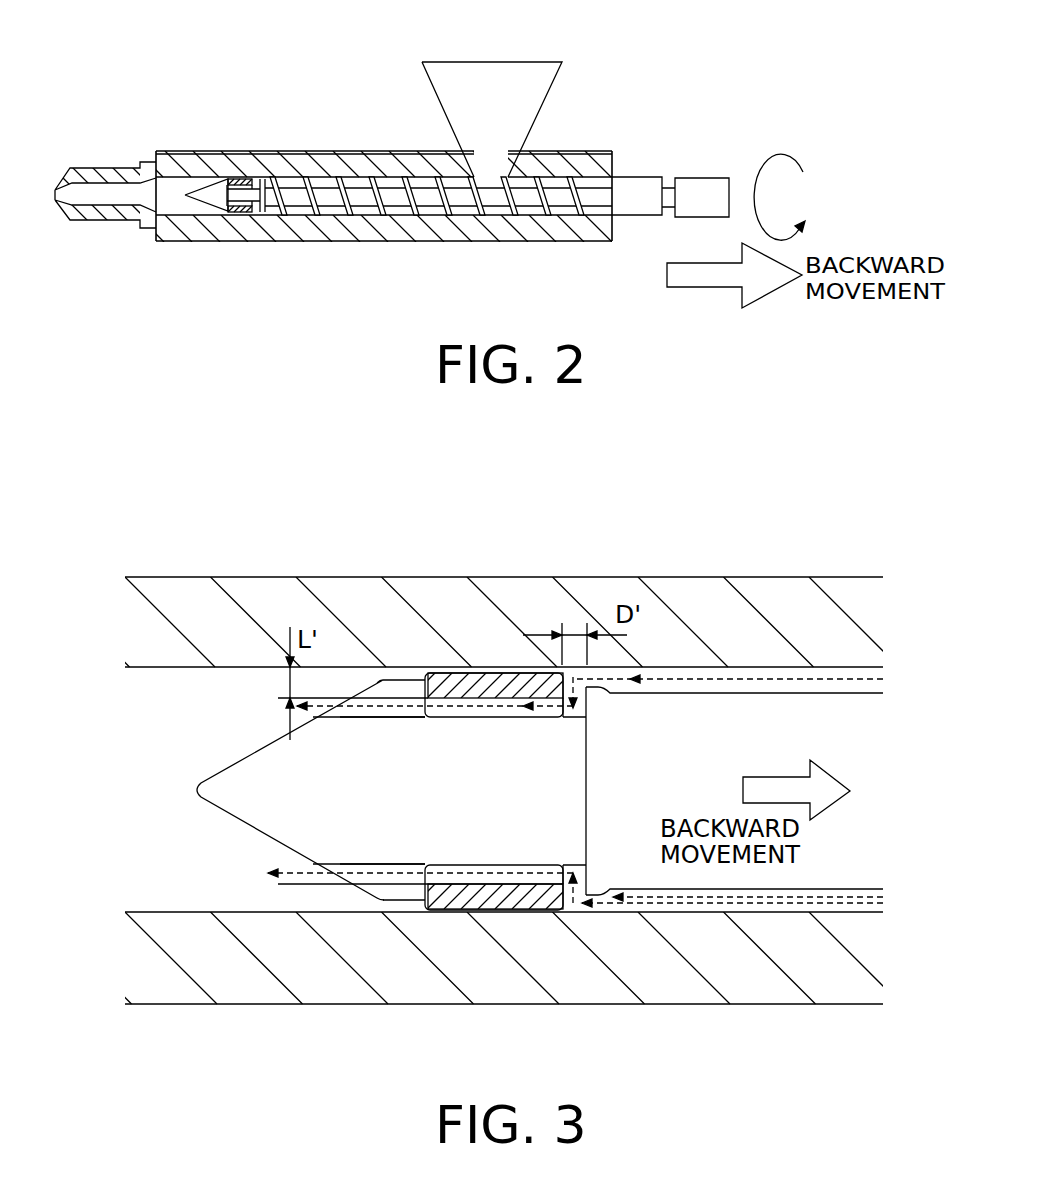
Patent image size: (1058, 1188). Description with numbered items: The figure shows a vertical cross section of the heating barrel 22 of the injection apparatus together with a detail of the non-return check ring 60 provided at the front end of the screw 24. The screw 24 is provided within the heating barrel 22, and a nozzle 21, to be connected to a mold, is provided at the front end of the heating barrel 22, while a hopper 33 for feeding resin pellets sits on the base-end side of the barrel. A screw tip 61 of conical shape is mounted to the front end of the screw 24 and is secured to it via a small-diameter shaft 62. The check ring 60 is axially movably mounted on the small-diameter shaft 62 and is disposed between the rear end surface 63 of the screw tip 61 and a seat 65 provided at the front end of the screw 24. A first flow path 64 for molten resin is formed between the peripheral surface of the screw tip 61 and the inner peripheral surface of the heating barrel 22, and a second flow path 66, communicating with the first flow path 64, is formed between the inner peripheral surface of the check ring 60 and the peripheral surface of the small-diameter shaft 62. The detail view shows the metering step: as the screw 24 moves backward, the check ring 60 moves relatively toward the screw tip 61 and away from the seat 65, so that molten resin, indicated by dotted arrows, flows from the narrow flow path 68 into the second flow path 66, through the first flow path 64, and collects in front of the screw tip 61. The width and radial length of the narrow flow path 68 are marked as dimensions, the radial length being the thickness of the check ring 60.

In FIG. 2, the nozzle 21 is at (103, 172).
In FIG. 2, the heating barrel 22 is at (347, 161).
In FIG. 3, the heating barrel 22 is at (517, 596).
In FIG. 2, the screw 24 is at (372, 214).
In FIG. 3, the screw 24 is at (758, 720).
In FIG. 2, the hopper 33 is at (542, 100).
In FIG. 2, the check ring 60 is at (240, 178).
In FIG. 3, the check ring 60 is at (492, 680).
In FIG. 2, the screw tip 61 is at (217, 187).
In FIG. 3, the screw tip 61 is at (289, 831).
In FIG. 2, the small-diameter shaft 62 is at (257, 213).
In FIG. 3, the small-diameter shaft 62 is at (525, 883).
In FIG. 3, the rear end surface 63 is at (478, 870).
In FIG. 3, the first flow path 64 is at (396, 890).
In FIG. 3, the seat 65 is at (578, 888).
In FIG. 3, the second flow path 66 is at (517, 838).
In FIG. 3, the narrow flow path 68 is at (575, 677).